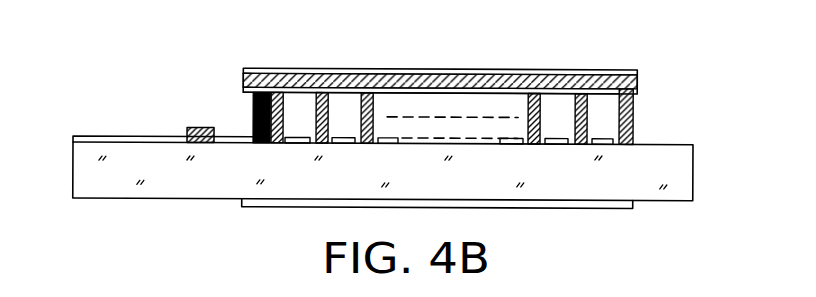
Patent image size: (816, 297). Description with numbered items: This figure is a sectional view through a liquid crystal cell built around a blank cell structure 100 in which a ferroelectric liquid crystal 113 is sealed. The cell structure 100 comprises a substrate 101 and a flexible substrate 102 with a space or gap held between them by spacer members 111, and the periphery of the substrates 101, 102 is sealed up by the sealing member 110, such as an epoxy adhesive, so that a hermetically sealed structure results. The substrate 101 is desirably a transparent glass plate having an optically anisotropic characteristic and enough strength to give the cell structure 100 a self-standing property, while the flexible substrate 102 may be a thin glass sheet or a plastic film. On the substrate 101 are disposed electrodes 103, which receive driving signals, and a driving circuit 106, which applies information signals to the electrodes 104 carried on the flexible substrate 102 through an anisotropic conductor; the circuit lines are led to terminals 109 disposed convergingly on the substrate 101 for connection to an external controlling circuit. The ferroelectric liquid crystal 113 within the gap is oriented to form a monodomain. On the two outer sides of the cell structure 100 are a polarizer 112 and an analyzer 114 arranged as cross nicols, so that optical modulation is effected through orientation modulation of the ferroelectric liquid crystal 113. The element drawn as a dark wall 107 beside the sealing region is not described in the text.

The cell structure 100 is at (777, 106).
The substrate 101 is at (693, 170).
The flexible substrate 102 is at (445, 60).
The electrodes 103 is at (394, 128).
The electrodes 104 is at (243, 85).
The driving circuit 106 is at (187, 128).
The seal wall 107 is at (253, 113).
The terminals 109 is at (68, 128).
The sealing member 110 is at (283, 113).
The spacer members 111 is at (329, 113).
The polarizer 112 is at (637, 68).
The ferroelectric liquid crystal 113 is at (495, 101).
The analyzer 114 is at (633, 205).